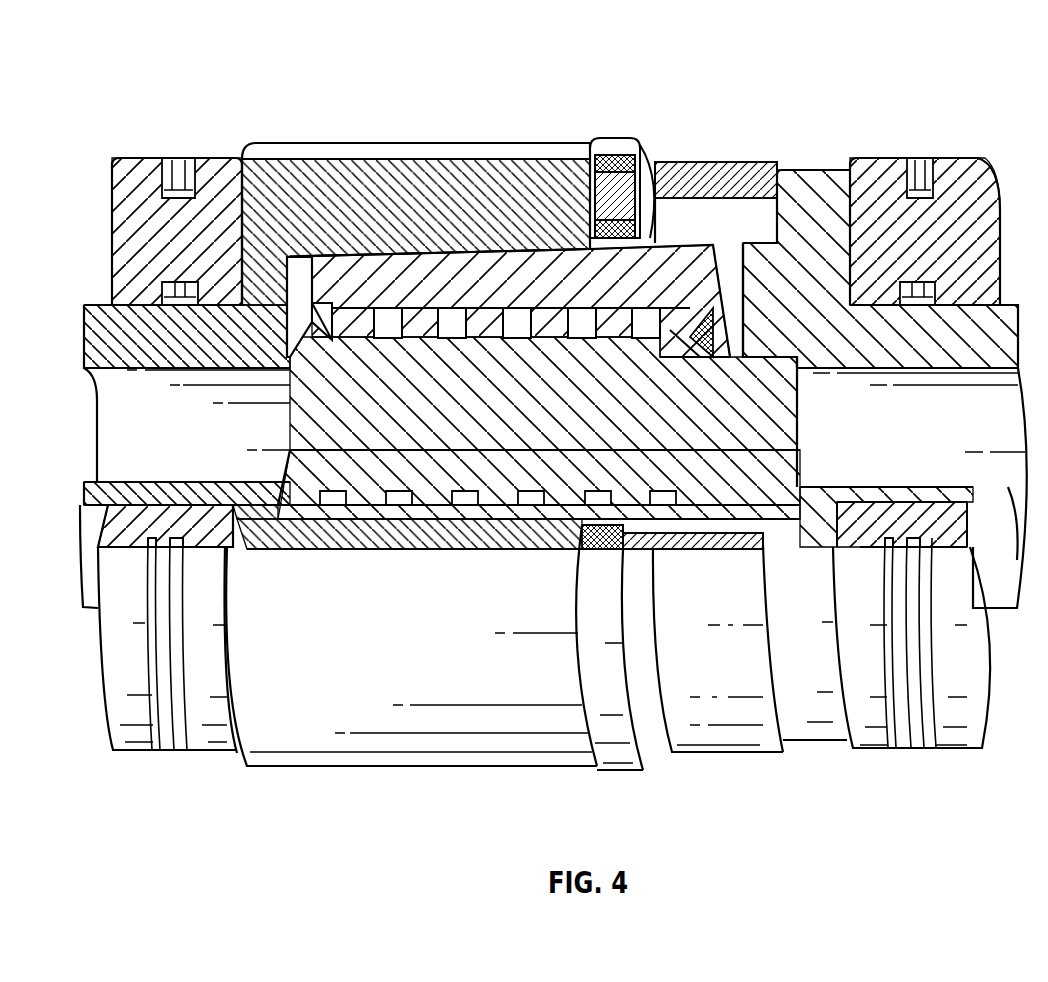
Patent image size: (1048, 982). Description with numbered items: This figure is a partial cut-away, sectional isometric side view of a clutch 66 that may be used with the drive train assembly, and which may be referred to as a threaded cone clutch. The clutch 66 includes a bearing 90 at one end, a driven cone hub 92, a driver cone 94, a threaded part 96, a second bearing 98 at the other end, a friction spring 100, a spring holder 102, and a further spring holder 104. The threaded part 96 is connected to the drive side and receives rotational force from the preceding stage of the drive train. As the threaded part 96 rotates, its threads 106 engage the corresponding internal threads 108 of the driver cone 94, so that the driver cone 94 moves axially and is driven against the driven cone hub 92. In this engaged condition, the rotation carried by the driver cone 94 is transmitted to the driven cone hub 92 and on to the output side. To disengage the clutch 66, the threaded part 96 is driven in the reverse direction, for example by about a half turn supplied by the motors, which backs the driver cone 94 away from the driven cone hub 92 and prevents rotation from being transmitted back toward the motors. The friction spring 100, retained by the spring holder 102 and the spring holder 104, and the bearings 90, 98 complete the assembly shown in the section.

The clutch 66 is at (955, 56).
The bearing 90 is at (138, 165).
The driven cone hub 92 is at (348, 152).
The driver cone 94 is at (508, 223).
The threaded part 96 is at (823, 190).
The bearing 98 is at (950, 165).
The friction spring 100 is at (698, 138).
The spring holder 102 is at (664, 762).
The spring holder 104 is at (752, 765).
The threads 106 is at (418, 486).
The internal threads 108 is at (407, 296).